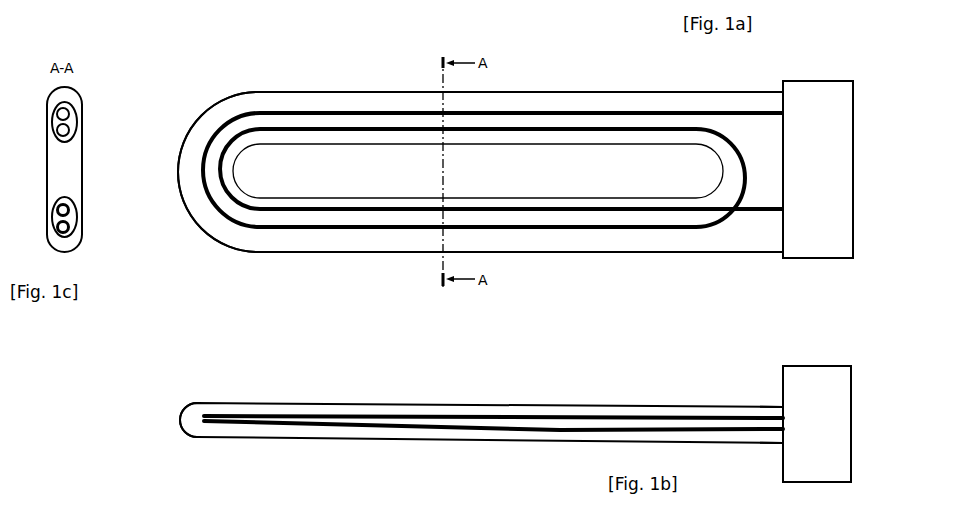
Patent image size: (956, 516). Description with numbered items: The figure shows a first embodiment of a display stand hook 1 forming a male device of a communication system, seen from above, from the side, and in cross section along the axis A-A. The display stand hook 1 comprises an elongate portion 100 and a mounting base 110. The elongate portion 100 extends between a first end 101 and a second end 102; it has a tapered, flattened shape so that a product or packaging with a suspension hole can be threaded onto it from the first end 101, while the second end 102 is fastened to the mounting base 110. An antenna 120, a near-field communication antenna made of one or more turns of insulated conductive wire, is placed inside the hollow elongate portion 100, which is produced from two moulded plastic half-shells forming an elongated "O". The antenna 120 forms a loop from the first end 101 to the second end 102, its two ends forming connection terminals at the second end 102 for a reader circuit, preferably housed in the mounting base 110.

In FIG. 1A, the display stand hook 1 is at (581, 70).
In FIG. 1B, the display stand hook 1 is at (581, 382).
In FIG. 1A, the elongate portion 100 is at (374, 90).
In FIG. 1B, the elongate portion 100 is at (363, 402).
In FIG. 1C, the elongate portion 100 is at (80, 94).
In FIG. 1A, the first end 101 is at (176, 190).
In FIG. 1B, the first end 101 is at (176, 400).
In FIG. 1A, the second end 102 is at (837, 172).
In FIG. 1B, the second end 102 is at (776, 266).
In FIG. 1A, the mounting base 110 is at (853, 98).
In FIG. 1B, the mounting base 110 is at (851, 391).
In FIG. 1A, the antenna 120 is at (270, 317).
In FIG. 1B, the antenna 120 is at (287, 400).
In FIG. 1C, the antenna 120 is at (70, 113).